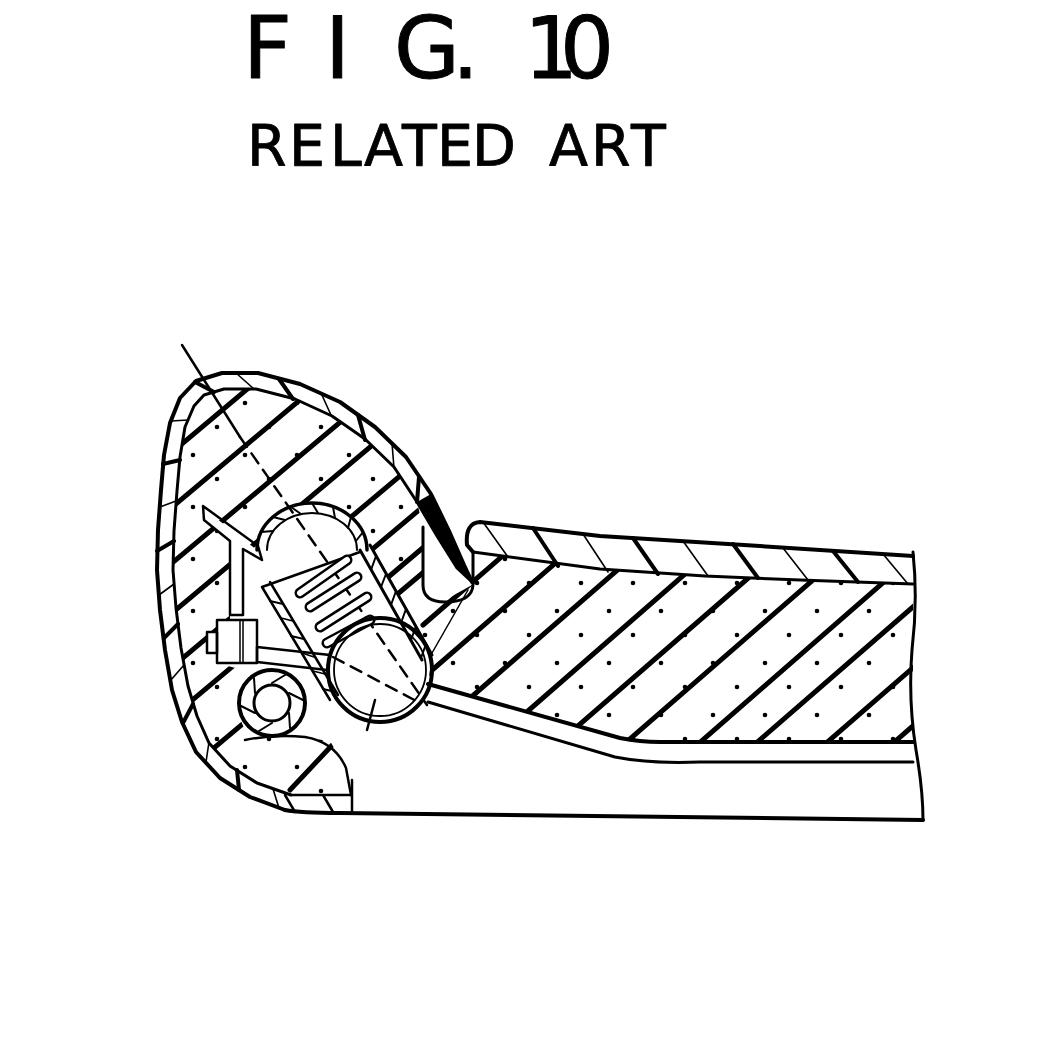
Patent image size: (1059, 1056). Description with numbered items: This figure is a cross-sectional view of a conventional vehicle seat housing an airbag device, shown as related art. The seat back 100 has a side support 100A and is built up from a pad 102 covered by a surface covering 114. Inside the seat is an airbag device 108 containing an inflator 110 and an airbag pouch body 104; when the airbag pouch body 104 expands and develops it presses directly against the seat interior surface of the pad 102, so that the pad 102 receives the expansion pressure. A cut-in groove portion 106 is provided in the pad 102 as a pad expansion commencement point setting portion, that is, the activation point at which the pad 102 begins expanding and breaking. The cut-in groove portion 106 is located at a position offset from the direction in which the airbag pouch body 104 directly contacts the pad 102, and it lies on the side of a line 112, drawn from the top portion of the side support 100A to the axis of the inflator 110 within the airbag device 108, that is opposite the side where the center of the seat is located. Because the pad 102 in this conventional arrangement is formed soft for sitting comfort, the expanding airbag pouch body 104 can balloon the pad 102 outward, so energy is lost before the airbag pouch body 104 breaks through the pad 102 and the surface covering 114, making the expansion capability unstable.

The seat back 100 is at (200, 787).
The side support 100A is at (330, 407).
The pad 102 is at (755, 600).
The airbag pouch body 104 is at (385, 530).
The cut-in groove portion 106 is at (163, 505).
The airbag device 108 is at (403, 740).
The inflator 110 is at (363, 745).
The line 112 is at (200, 365).
The surface covering 114 is at (165, 450).